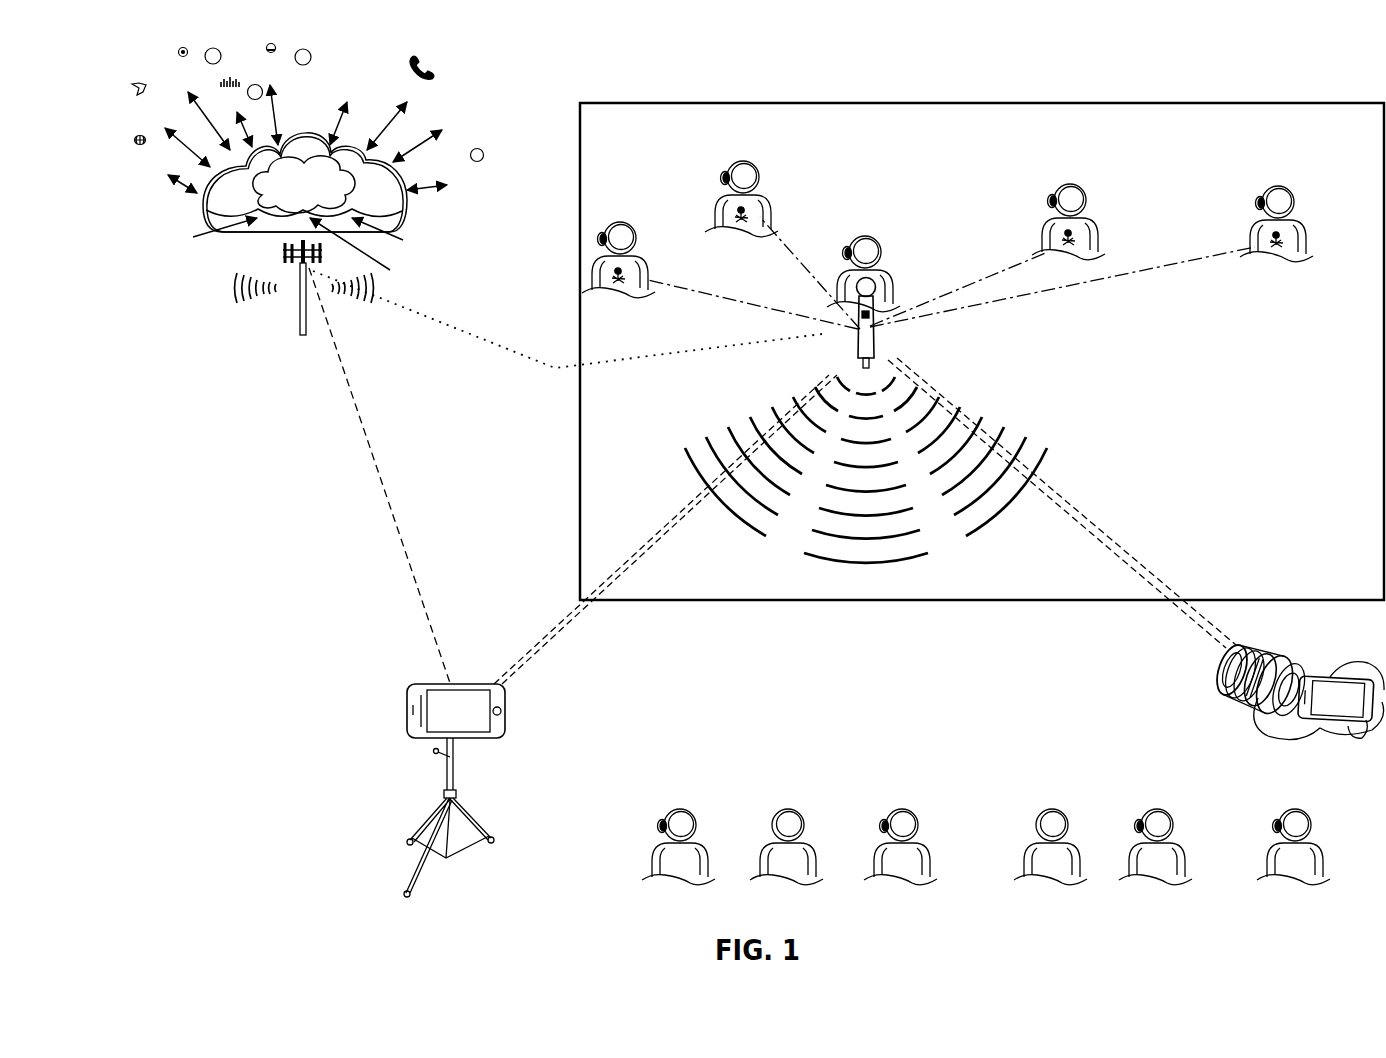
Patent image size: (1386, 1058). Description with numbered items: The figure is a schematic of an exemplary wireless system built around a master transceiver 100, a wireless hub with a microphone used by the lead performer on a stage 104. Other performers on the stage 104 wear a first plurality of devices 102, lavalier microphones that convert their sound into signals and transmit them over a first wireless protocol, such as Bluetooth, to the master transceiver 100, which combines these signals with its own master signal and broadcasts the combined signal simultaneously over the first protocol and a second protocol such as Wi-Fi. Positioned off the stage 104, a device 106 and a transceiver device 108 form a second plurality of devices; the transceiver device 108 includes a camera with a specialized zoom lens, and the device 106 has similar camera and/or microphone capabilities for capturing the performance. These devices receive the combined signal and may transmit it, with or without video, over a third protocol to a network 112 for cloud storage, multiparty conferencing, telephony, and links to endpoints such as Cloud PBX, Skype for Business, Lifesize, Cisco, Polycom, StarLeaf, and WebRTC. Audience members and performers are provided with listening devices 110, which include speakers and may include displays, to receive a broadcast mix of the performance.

The master transceiver 100 is at (882, 327).
The first plurality of devices 102 is at (632, 275).
The stage 104 is at (1265, 430).
The device 106 is at (468, 708).
The transceiver device 108 is at (1302, 660).
The listening devices 110 is at (603, 236).
The network 112 is at (505, 63).